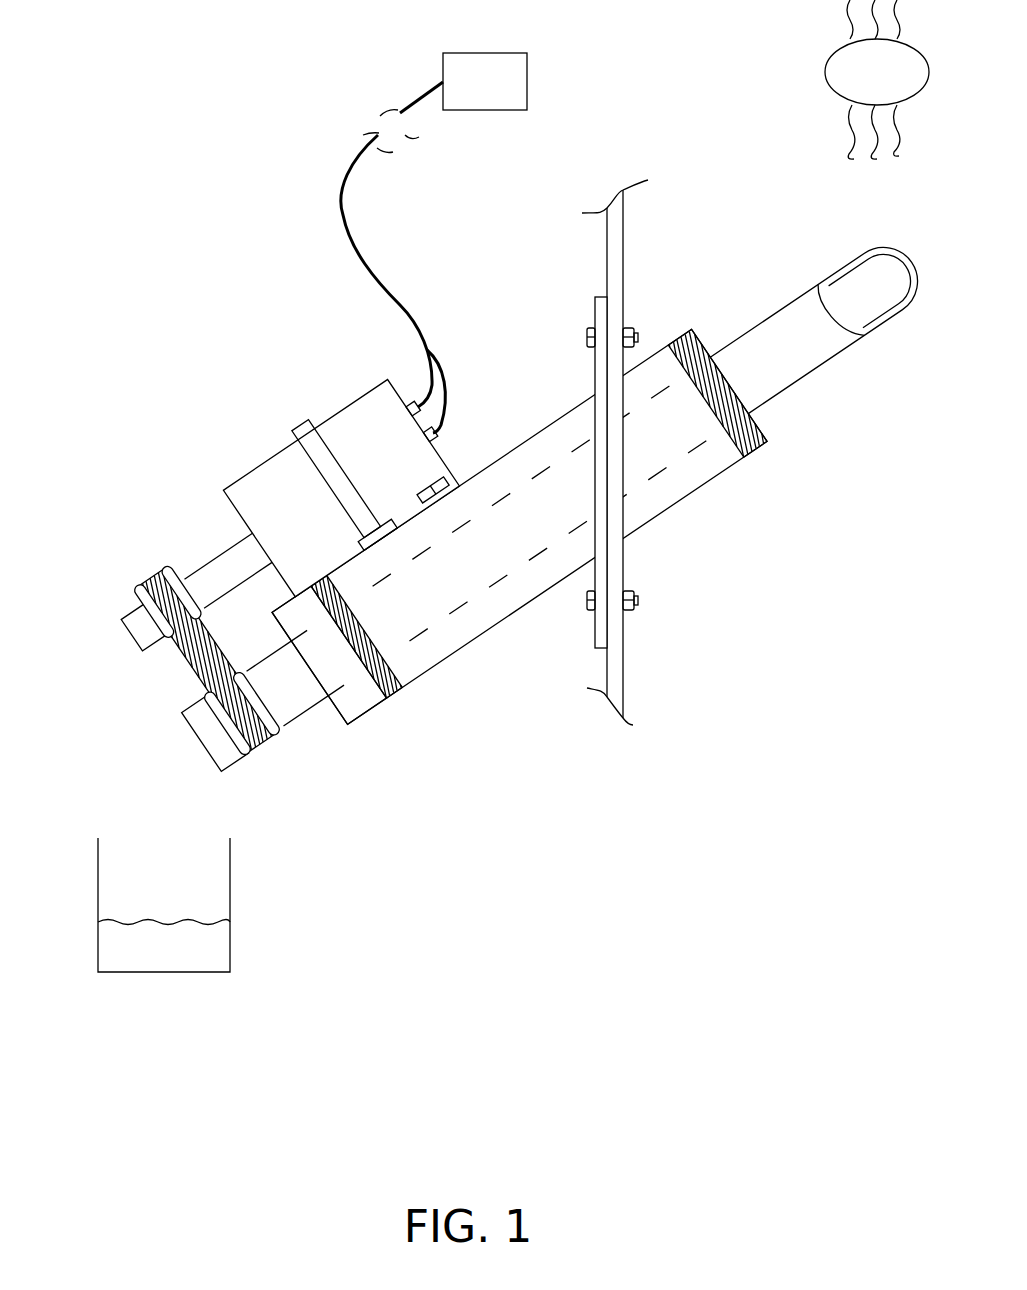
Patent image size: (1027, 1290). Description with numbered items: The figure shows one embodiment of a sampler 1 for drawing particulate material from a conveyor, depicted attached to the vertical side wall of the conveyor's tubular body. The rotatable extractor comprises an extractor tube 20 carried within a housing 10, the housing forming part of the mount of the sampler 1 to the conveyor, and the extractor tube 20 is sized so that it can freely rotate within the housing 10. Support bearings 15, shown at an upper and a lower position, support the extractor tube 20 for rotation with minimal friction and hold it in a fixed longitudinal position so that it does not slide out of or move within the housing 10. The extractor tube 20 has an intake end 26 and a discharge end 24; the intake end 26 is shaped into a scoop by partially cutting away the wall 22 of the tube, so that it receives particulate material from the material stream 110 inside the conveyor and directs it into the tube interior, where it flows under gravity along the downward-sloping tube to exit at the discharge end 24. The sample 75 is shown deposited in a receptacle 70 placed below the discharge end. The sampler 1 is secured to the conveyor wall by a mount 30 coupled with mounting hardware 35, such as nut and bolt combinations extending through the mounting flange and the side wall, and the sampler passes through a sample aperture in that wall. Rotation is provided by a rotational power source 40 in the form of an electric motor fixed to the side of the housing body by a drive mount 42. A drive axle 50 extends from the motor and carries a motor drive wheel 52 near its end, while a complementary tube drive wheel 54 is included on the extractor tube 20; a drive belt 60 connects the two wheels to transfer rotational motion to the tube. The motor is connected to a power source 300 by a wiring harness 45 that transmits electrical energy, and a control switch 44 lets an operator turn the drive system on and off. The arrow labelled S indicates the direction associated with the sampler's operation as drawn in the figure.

The sampler 1 is at (478, 868).
The housing 10 is at (428, 689).
The support bearings 15 is at (669, 347).
The extractor tube 20 is at (305, 737).
The wall 22 is at (895, 333).
The discharge end 24 is at (203, 745).
The intake end 26 is at (850, 297).
The mount 30 is at (586, 670).
The mounting hardware 35 is at (580, 318).
The rotational power source 40 is at (272, 428).
The drive mount 42 is at (313, 421).
The control switch 44 is at (447, 478).
The wiring harness 45 is at (330, 186).
The drive axle 50 is at (197, 537).
The motor drive wheel 52 is at (138, 583).
The tube drive wheel 54 is at (247, 756).
The drive belt 60 is at (181, 679).
The receptacle 70 is at (169, 985).
The sample 75 is at (212, 955).
The material stream 110 is at (877, 79).
The power source 300 is at (485, 81).
The sample flow direction S is at (571, 376).